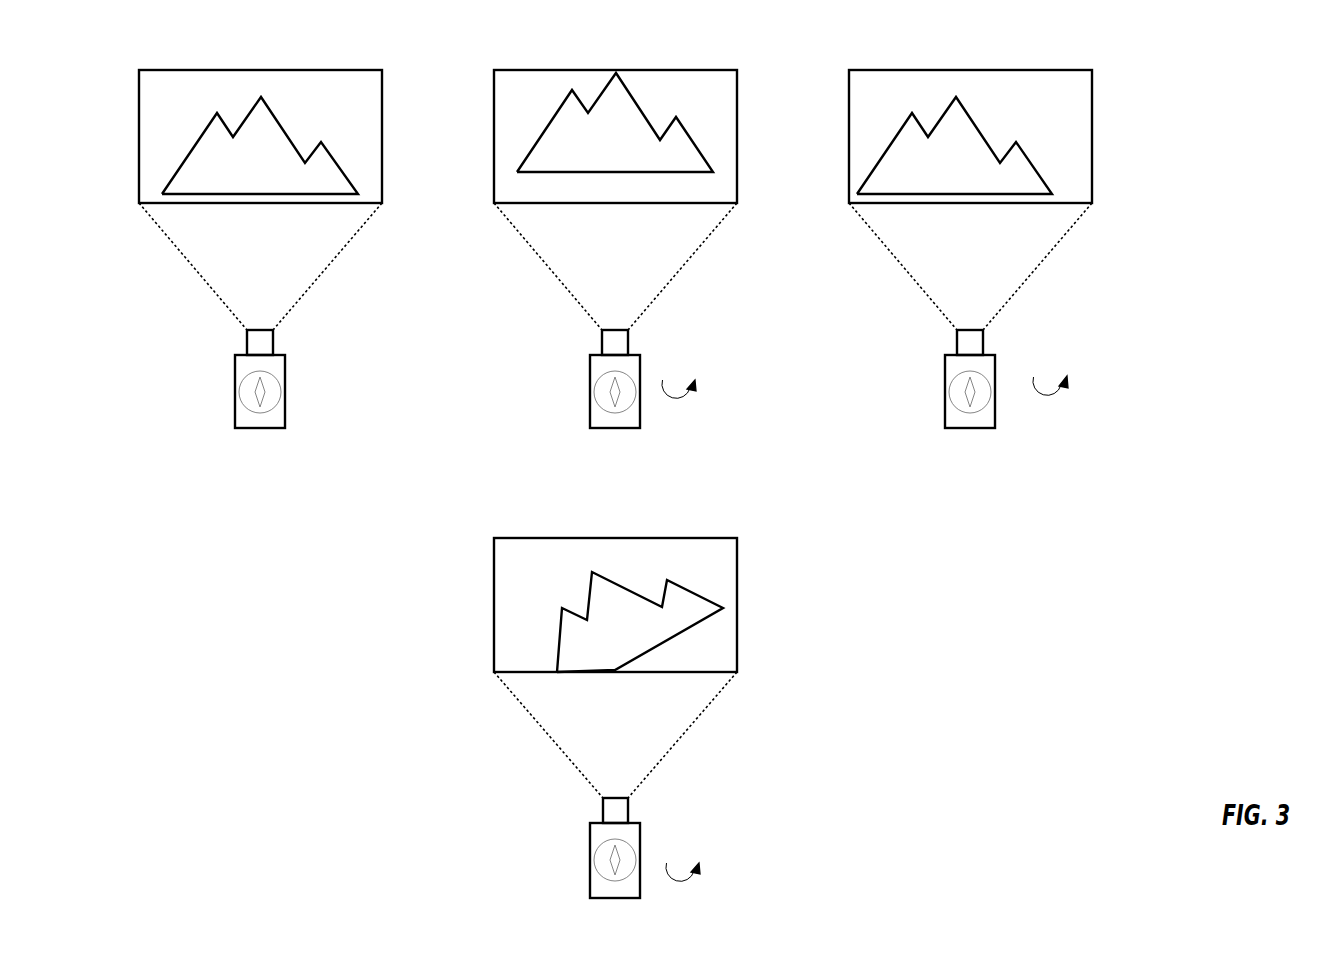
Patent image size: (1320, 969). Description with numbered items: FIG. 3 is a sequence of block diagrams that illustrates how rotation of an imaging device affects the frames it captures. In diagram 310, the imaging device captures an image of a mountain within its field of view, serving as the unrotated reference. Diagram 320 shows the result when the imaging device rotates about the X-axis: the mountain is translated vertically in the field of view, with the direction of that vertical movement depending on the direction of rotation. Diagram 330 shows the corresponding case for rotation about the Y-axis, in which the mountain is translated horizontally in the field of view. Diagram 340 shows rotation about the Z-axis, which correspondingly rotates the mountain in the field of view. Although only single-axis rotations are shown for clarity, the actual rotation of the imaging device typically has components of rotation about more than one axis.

The diagram 310 is at (286, 254).
The diagram 320 is at (644, 254).
The diagram 330 is at (1031, 254).
The diagram 340 is at (652, 707).